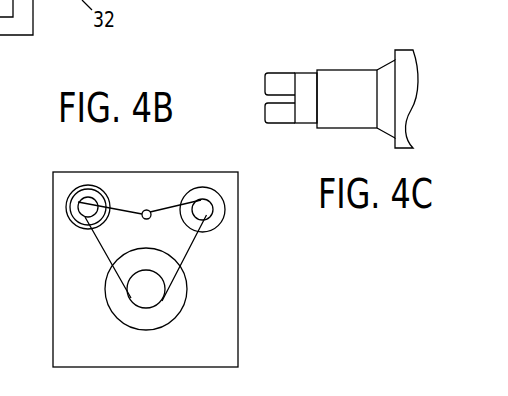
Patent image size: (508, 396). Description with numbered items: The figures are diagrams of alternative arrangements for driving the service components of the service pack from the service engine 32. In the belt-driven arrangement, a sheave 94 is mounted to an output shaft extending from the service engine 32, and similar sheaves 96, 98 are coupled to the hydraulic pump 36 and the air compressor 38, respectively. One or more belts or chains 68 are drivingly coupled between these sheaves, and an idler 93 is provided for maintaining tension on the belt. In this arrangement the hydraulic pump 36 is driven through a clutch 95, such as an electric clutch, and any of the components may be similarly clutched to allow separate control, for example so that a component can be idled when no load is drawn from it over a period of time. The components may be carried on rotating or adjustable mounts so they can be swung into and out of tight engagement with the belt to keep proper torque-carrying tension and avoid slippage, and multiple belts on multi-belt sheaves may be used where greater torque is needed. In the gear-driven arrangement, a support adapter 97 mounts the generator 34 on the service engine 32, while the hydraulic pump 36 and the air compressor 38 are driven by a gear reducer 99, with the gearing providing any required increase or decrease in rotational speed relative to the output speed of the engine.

In FIG. 4B, the service engine 32 is at (238, 331).
In FIG. 4C, the service engine 32 is at (403, 50).
In FIG. 4B, the generator 34 is at (110, 308).
In FIG. 4C, the generator 34 is at (337, 128).
In FIG. 4B, the hydraulic pump 36 is at (67, 196).
In FIG. 4C, the hydraulic pump 36 is at (283, 73).
In FIG. 4B, the air compressor 38 is at (225, 218).
In FIG. 4C, the air compressor 38 is at (277, 124).
In FIG. 4B, the belts or chains 68 is at (100, 249).
In FIG. 4B, the idler 93 is at (148, 210).
In FIG. 4B, the sheave 94 is at (152, 293).
In FIG. 4B, the clutch 95 is at (80, 194).
In FIG. 4B, the sheave 96 is at (88, 205).
In FIG. 4C, the support adapter 97 is at (390, 63).
In FIG. 4B, the sheave 98 is at (202, 208).
In FIG. 4C, the gear reducer 99 is at (308, 72).